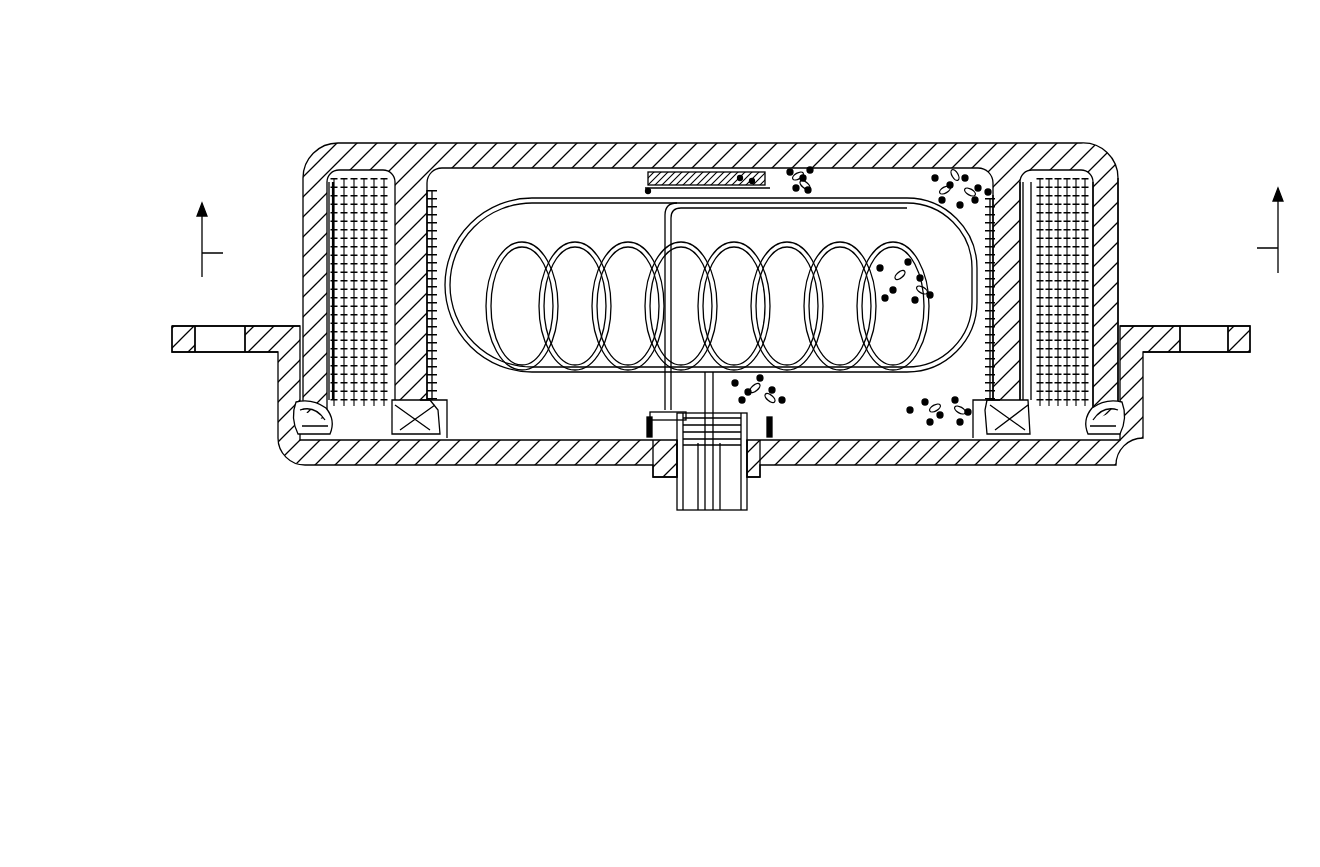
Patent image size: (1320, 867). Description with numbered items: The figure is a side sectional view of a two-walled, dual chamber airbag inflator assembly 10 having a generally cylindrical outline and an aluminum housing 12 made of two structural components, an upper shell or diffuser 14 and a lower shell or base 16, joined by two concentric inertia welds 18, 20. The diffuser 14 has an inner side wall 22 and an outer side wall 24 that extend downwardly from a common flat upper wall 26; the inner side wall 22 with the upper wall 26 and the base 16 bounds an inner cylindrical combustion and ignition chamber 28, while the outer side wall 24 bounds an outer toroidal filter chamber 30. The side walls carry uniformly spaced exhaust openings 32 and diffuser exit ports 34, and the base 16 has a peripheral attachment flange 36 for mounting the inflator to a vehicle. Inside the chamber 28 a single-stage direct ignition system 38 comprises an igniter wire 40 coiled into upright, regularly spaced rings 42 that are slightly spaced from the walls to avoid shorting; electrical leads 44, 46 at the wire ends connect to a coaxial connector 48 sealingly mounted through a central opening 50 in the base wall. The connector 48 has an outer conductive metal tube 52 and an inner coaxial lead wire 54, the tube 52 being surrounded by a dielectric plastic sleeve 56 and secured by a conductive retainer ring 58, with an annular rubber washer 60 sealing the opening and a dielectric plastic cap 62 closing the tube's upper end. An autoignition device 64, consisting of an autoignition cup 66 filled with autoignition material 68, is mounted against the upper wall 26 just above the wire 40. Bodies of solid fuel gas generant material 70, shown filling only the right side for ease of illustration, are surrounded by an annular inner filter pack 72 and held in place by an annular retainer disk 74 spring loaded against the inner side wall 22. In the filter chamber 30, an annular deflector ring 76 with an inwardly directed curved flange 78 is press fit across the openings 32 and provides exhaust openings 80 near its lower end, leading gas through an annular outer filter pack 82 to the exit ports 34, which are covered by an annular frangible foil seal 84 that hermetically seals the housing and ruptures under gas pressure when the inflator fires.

The inflator assembly 10 is at (326, 138).
The housing 12 is at (296, 166).
The diffuser 14 is at (421, 138).
The base 16 is at (415, 447).
The inertia weld 18 is at (375, 443).
The inertia weld 20 is at (310, 467).
The inner side wall 22 is at (1003, 195).
The outer side wall 24 is at (1099, 160).
The upper wall 26 is at (933, 138).
The inner cylindrical chamber 28 is at (556, 424).
The outer toroidal chamber 30 is at (1058, 427).
The exhaust openings 32 is at (1007, 273).
The diffuser exit ports 34 is at (1103, 202).
The peripheral attachment flange 36 is at (1163, 327).
The direct ignition system 38 is at (509, 385).
The igniter wire 40 is at (487, 227).
The rings 42 is at (528, 243).
The electrical lead 44 is at (660, 386).
The electrical lead 46 is at (665, 392).
The coaxial connector 48 is at (692, 528).
The central opening 50 is at (663, 443).
The outer conductive metal tube 52 is at (750, 500).
The inner coaxial lead wire 54 is at (717, 500).
The dielectric plastic sleeve 56 is at (750, 493).
The conductive retainer ring 58 is at (640, 437).
The annular rubber washer 60 is at (760, 463).
The dielectric plastic cap 62 is at (690, 485).
The autoignition device 64 is at (693, 170).
The autoignition cup 66 is at (648, 190).
The autoignition material 68 is at (735, 172).
The solid fuel gas generant material 70 is at (800, 172).
The inner filter pack 72 is at (437, 187).
The annular retainer disk 74 is at (457, 435).
The annular deflector ring 76 is at (430, 240).
The curved flange 78 is at (387, 173).
The exhaust openings 80 is at (405, 357).
The outer filter pack 82 is at (347, 230).
The frangible foil seal 84 is at (333, 231).